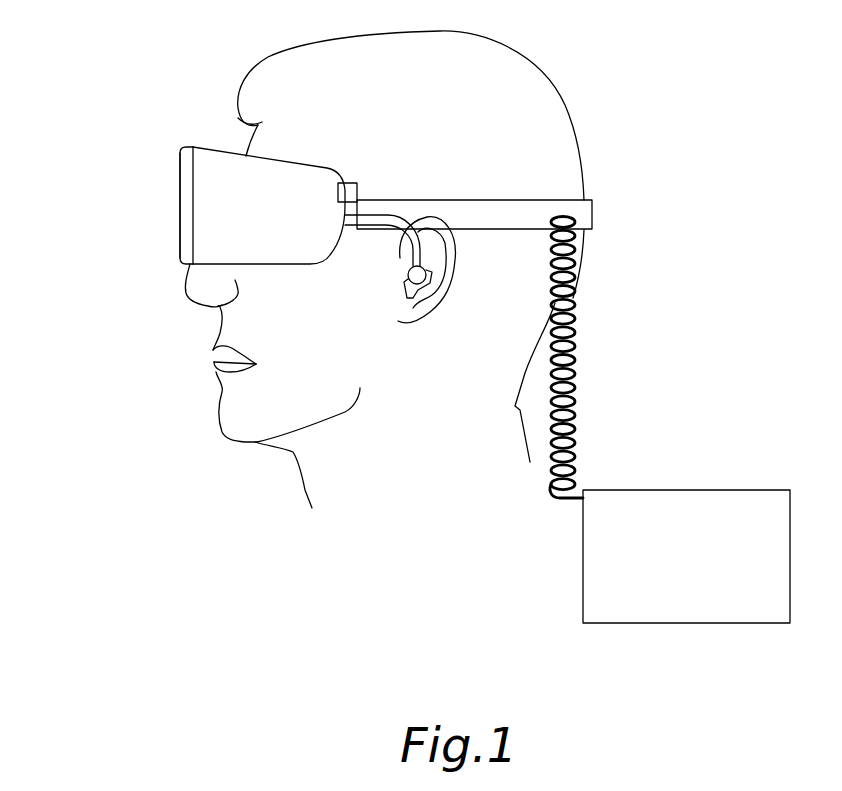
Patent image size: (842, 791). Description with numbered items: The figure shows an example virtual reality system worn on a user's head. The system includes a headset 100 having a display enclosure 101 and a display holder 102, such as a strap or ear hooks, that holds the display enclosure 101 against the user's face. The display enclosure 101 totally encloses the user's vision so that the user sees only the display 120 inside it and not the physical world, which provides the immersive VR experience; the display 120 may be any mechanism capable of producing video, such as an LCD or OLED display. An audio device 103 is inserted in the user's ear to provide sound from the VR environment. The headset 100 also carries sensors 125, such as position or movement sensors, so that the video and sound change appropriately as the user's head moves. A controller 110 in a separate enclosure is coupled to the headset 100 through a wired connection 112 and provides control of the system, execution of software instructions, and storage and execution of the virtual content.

The headset 100 is at (150, 124).
The display enclosure 101 is at (294, 178).
The display holder 102 is at (516, 200).
The audio device 103 is at (393, 214).
The controller 110 is at (688, 490).
The wired connection 112 is at (575, 345).
The display 120 is at (180, 207).
The sensors 125 is at (347, 183).